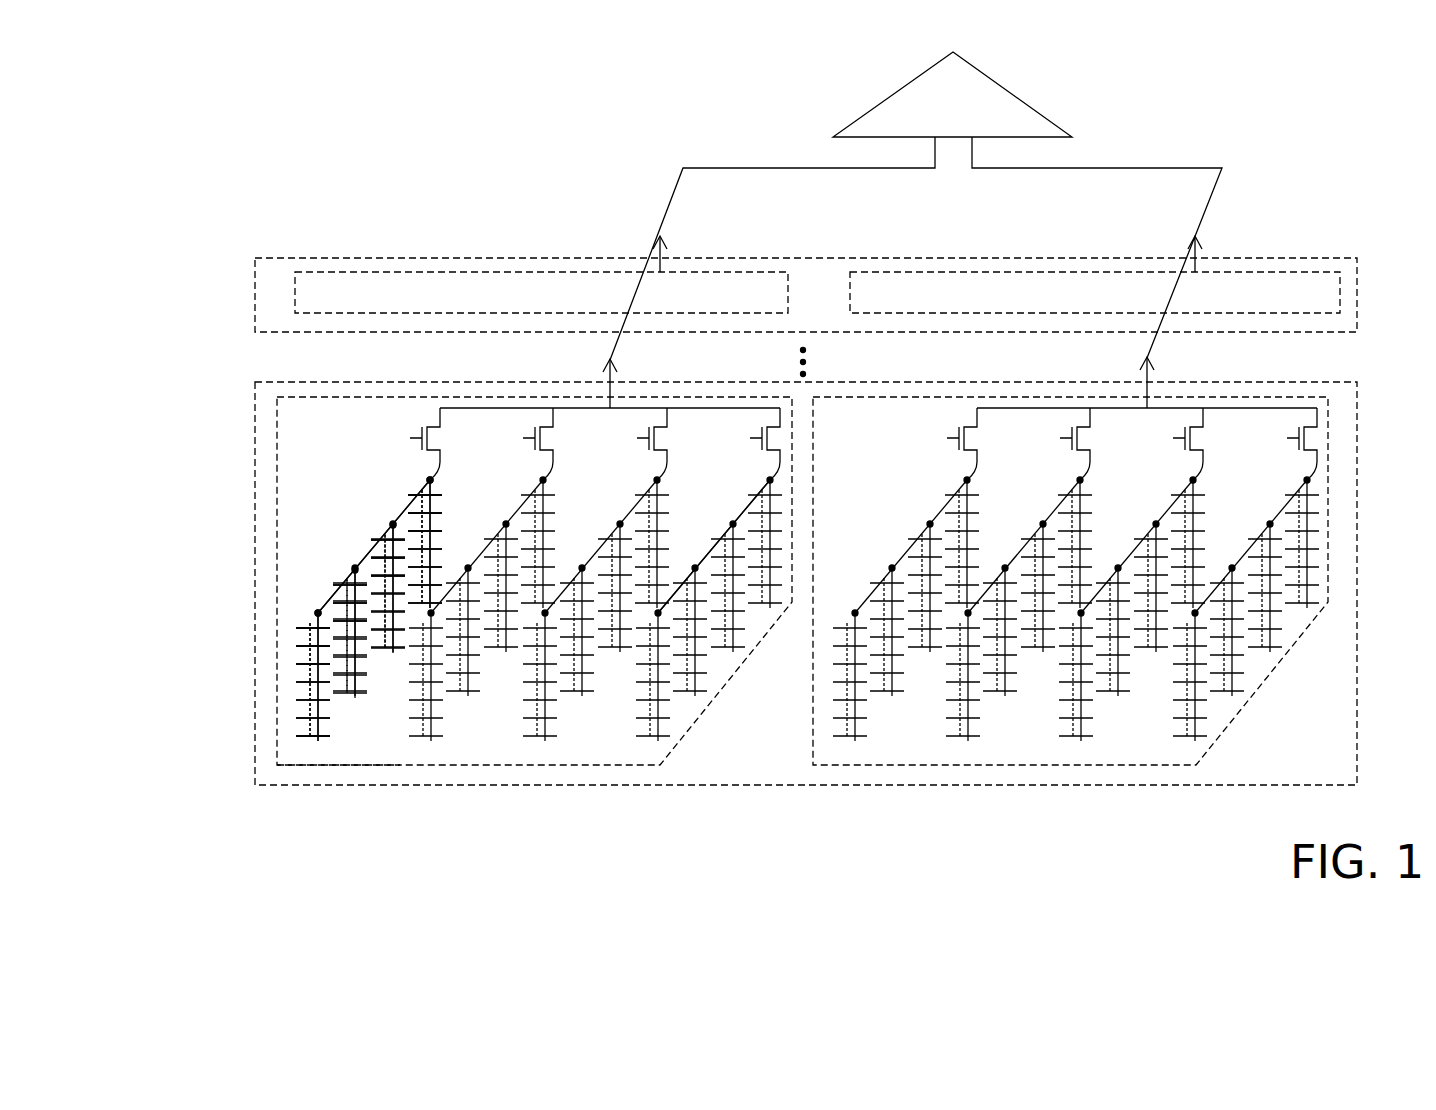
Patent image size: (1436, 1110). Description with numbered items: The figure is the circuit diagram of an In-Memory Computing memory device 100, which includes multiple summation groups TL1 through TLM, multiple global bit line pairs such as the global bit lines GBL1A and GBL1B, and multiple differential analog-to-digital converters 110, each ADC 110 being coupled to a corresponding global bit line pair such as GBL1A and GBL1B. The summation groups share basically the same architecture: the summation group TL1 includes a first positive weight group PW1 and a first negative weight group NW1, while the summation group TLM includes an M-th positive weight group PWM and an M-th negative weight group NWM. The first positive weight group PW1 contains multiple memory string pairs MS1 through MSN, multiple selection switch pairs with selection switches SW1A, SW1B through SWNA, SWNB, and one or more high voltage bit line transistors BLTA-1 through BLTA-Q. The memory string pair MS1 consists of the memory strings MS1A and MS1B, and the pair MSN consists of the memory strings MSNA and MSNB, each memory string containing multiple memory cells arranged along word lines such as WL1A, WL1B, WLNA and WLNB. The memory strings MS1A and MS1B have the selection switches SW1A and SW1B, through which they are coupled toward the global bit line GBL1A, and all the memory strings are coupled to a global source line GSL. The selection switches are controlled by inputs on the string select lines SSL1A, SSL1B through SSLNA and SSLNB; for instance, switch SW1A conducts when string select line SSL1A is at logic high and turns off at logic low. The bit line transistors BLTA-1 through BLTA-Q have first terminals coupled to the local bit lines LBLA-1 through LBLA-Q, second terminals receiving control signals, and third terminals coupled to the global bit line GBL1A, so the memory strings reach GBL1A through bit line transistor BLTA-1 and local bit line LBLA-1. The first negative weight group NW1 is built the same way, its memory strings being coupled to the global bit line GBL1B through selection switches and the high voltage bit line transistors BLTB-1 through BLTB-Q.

The IMC memory device 100 is at (200, 72).
The differential analog-to-digital converter 110 is at (886, 100).
The global bit line GBL1A is at (761, 272).
The global bit line GBL1B is at (1143, 272).
The summation group TLM is at (348, 334).
The M-th positive weight group PWM is at (545, 316).
The M-th negative weight group NWM is at (1008, 316).
The first positive weight group PW1 is at (728, 690).
The first negative weight group NW1 is at (1264, 690).
The summation group TL1 is at (305, 787).
The bit line transistor BLTA-1 is at (424, 572).
The bit line transistor BLTA-Q is at (709, 574).
The bit line transistor BLTB-1 is at (961, 574).
The bit line transistor BLTB-Q is at (1246, 574).
The local bit line LBLA-1 is at (336, 594).
The local bit line LBLA-Q is at (745, 522).
The memory string MSNA is at (402, 565).
The memory string MSNB is at (432, 488).
The memory string MS1A is at (312, 742).
The memory string MS1B is at (298, 682).
The selection switch SWNB is at (412, 490).
The string select line SSLNB is at (410, 508).
The word line NB WLNB is at (408, 526).
The selection switch SWNA is at (376, 540).
The string select line SSLNA is at (374, 558).
The word line NA WLNA is at (372, 576).
The selection switch SW1B is at (338, 585).
The string select line SSL1B is at (336, 603).
The selection switch SW1A is at (300, 628).
The string select line SSL1A is at (298, 646).
The word line 1A WL1A is at (296, 664).
The word line 1B WL1B is at (356, 592).
The global source line GSL is at (298, 723).
The memory string pair MS1 is at (400, 812).
The memory string pair MSN is at (596, 812).